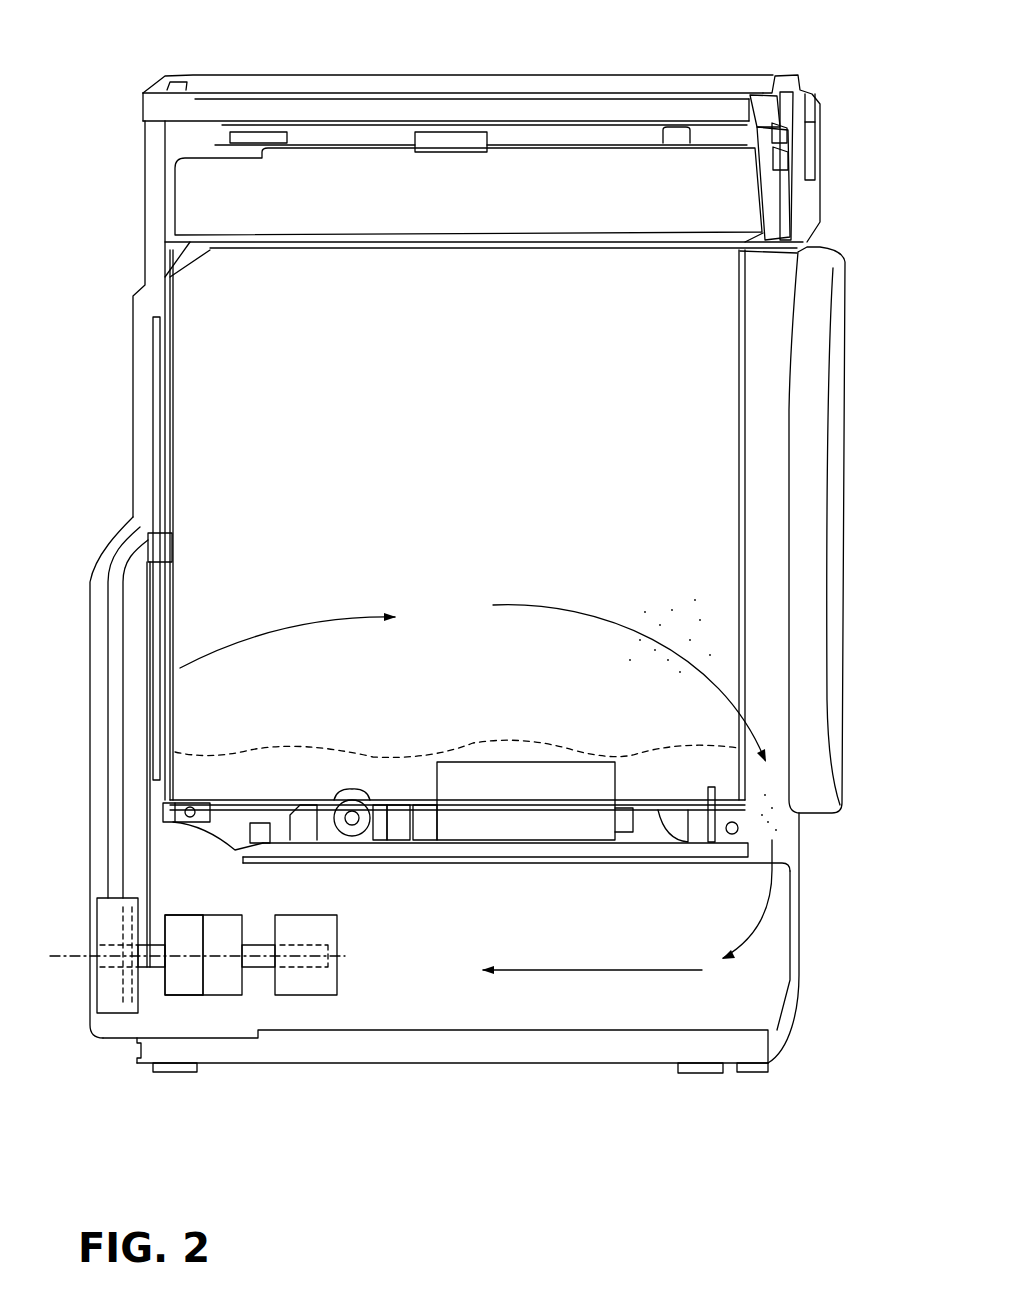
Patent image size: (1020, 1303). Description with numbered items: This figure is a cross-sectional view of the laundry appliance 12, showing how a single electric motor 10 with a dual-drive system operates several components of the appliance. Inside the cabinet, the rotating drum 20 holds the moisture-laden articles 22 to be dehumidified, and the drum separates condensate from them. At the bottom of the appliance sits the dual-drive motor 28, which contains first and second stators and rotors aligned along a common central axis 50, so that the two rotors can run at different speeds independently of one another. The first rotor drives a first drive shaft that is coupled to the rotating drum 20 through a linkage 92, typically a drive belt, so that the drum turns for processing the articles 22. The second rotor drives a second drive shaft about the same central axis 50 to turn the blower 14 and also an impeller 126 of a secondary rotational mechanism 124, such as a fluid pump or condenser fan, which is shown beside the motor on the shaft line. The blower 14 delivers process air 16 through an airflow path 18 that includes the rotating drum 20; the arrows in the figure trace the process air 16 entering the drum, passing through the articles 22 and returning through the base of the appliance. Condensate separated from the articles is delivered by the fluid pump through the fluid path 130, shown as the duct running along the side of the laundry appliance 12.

The laundry appliance 12 is at (335, 65).
The rotating drum 20 is at (650, 478).
The fluid path 130 is at (113, 583).
The articles 22 is at (250, 767).
The linkage 92 is at (147, 797).
The dual-drive motor 28 is at (190, 903).
The impeller 126 is at (117, 923).
The central axis 50 is at (72, 957).
The secondary rotational mechanism 124 is at (117, 1027).
The electric motor 10 is at (213, 1005).
The blower 14 is at (312, 1005).
The process air 16 is at (530, 995).
The airflow path 18 is at (770, 933).